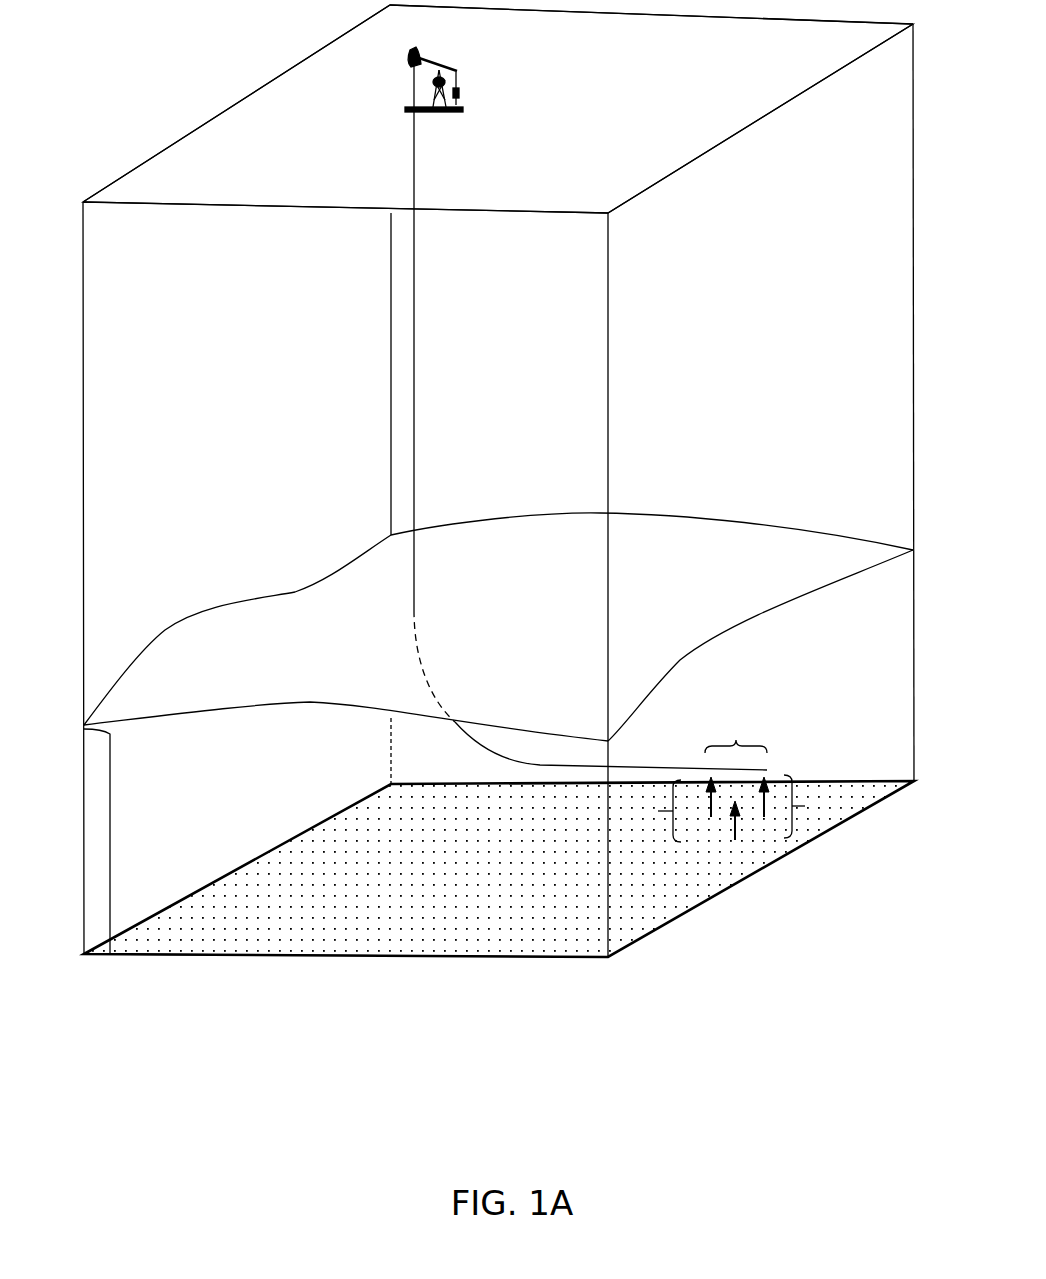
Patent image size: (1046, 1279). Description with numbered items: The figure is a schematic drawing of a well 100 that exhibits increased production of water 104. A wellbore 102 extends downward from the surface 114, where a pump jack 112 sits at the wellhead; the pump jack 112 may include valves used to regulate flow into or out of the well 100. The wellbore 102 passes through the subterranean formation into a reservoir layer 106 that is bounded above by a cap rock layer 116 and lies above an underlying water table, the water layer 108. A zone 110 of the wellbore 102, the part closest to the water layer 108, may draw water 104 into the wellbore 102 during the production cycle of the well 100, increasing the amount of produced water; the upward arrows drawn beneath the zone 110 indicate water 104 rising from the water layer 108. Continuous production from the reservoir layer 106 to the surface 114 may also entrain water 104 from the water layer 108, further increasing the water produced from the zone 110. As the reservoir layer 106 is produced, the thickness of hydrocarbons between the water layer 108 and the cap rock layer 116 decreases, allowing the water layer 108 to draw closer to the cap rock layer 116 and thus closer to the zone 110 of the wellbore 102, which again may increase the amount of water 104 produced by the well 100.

The well 100 is at (537, 1178).
The wellbore 102 is at (414, 428).
The water 104 is at (805, 806).
The reservoir layer 106 is at (110, 843).
The water layer 108 is at (368, 957).
The zone 110 is at (736, 742).
The pump jack 112 is at (412, 48).
The surface 114 is at (287, 107).
The cap rock layer 116 is at (722, 543).